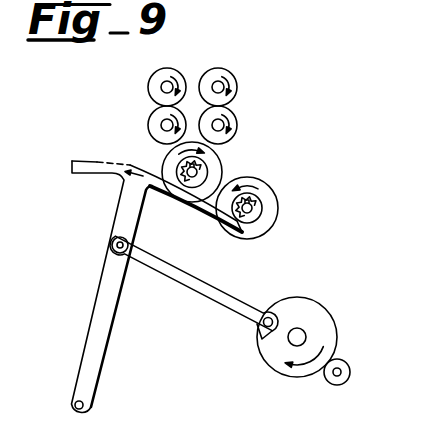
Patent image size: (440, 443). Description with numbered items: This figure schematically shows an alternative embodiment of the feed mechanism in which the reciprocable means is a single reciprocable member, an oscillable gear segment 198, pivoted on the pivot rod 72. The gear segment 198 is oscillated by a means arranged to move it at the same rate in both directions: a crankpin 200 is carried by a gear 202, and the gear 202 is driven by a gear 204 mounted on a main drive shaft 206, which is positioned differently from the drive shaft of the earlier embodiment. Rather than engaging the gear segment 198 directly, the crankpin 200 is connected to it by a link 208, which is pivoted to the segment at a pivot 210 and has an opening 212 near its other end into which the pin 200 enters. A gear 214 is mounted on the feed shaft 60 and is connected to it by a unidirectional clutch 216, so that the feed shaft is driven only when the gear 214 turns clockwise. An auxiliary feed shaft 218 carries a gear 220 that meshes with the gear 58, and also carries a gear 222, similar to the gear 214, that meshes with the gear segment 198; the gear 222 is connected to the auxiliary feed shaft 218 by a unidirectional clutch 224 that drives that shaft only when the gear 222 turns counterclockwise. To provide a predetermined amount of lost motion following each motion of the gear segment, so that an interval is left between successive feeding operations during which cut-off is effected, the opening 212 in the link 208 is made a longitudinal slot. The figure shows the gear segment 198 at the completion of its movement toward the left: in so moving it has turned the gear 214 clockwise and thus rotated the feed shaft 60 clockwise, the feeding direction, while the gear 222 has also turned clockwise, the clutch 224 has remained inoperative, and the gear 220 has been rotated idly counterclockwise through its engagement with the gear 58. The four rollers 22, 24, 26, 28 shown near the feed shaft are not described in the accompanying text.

The feed roller 22 is at (236, 79).
The feed roller 24 is at (237, 121).
The feed roller 26 is at (150, 78).
The feed roller 28 is at (150, 119).
The gear 58 is at (226, 170).
The feed shaft 60 is at (200, 167).
The pivot rod 72 is at (74, 404).
The gear segment 198 is at (90, 161).
The crankpin 200 is at (258, 322).
The gear 202 is at (277, 372).
The gear 204 is at (350, 373).
The main drive shaft 206 is at (345, 361).
The link 208 is at (191, 291).
The pivot 210 is at (112, 245).
The opening 212 is at (260, 338).
The gear 214 is at (160, 161).
The unidirectional clutch 216 is at (177, 172).
The auxiliary feed shaft 218 is at (268, 203).
The gear 220 is at (250, 196).
The gear 222 is at (275, 196).
The unidirectional clutch 224 is at (218, 218).